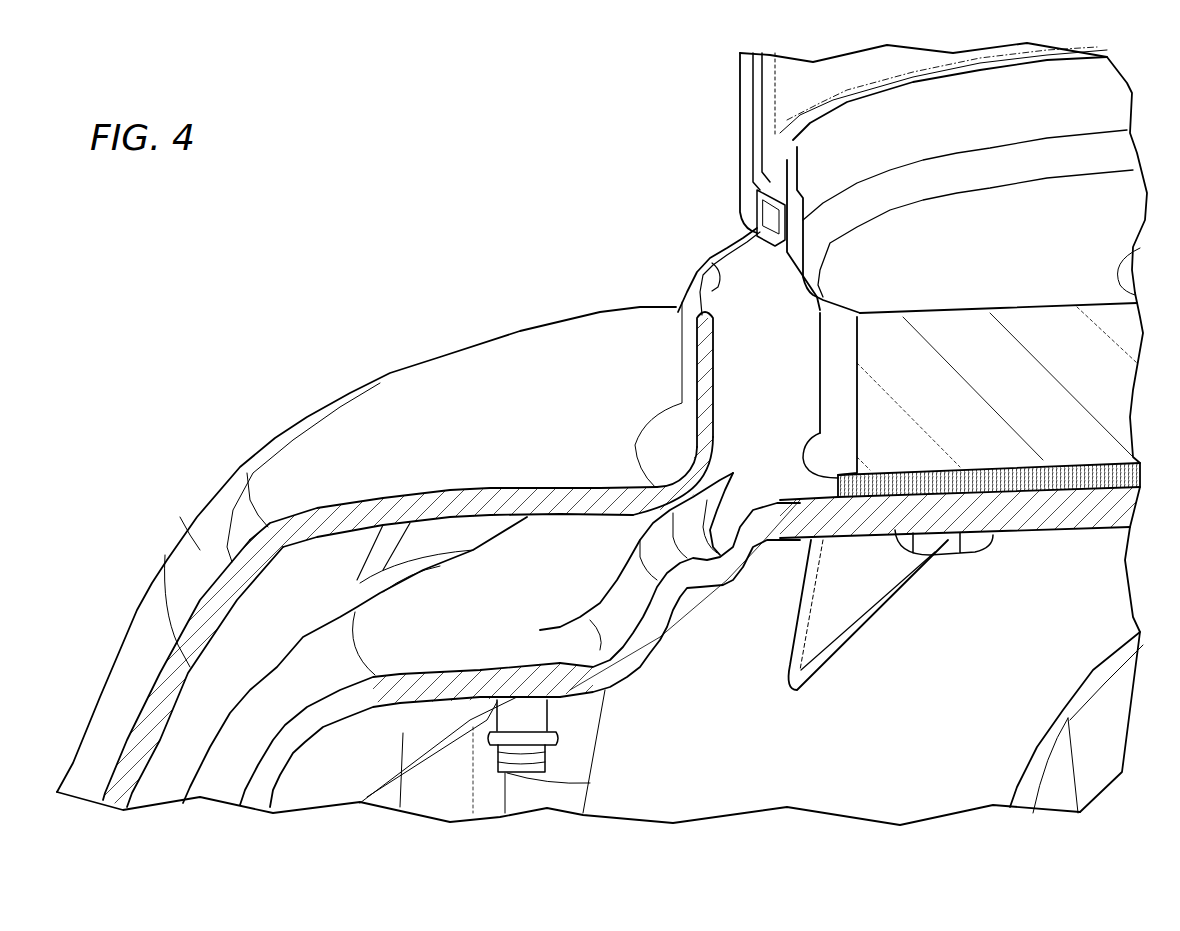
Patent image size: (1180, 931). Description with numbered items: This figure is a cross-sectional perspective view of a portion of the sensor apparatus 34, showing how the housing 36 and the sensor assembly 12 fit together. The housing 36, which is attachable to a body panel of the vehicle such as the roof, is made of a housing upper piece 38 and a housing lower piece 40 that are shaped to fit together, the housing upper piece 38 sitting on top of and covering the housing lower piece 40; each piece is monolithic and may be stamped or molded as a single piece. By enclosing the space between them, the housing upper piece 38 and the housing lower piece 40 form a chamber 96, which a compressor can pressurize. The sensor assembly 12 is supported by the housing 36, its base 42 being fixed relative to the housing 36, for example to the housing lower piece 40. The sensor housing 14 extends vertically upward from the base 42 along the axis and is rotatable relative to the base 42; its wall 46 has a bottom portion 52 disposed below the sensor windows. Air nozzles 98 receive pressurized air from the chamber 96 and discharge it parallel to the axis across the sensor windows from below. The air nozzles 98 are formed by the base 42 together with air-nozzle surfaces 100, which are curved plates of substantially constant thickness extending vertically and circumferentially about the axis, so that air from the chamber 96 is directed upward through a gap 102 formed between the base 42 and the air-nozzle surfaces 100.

The sensor assembly 12 is at (567, 151).
The sensor housing 14 is at (745, 80).
The sensor apparatus 34 is at (265, 343).
The housing 36 is at (415, 359).
The housing upper piece 38 is at (194, 542).
The housing lower piece 40 is at (262, 715).
The base 42 is at (1041, 492).
The wall 46 is at (738, 144).
The bottom portion 52 is at (767, 255).
The chamber 96 is at (175, 765).
The air nozzles 98 is at (690, 320).
The air-nozzle surfaces 100 is at (688, 280).
The gap 102 is at (710, 264).